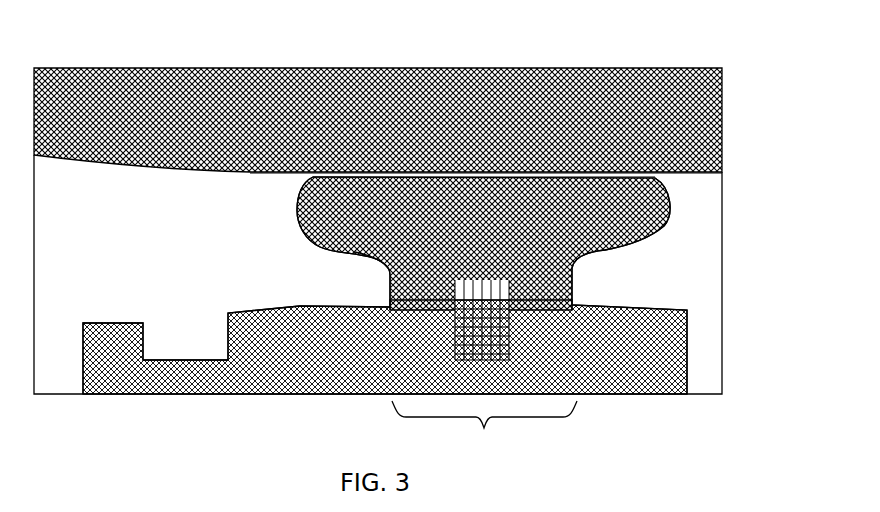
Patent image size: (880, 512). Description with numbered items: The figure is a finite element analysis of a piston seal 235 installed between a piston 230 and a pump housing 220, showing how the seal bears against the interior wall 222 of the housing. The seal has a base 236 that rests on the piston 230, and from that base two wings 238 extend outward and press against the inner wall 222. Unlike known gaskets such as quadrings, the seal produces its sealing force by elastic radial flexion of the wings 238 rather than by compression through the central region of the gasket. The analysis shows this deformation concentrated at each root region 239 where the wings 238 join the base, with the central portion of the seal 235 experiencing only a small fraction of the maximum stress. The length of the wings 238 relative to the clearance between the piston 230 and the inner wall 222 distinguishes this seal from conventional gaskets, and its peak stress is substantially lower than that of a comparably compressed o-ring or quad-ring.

The pump housing 220 is at (722, 118).
The interior wall 222 is at (704, 173).
The piston 230 is at (687, 364).
The piston seal 235 is at (573, 266).
The base 236 is at (484, 429).
The wings 238 is at (347, 249).
The root region 239 is at (373, 258).